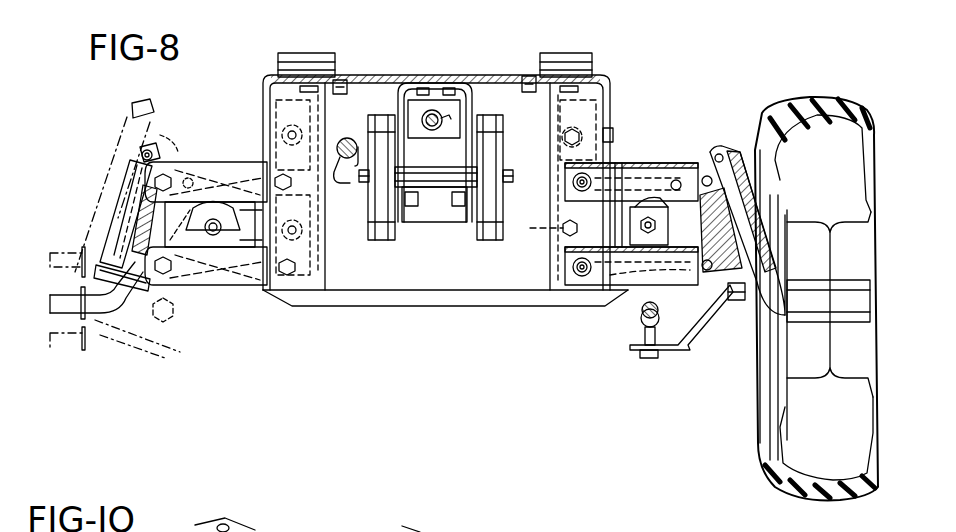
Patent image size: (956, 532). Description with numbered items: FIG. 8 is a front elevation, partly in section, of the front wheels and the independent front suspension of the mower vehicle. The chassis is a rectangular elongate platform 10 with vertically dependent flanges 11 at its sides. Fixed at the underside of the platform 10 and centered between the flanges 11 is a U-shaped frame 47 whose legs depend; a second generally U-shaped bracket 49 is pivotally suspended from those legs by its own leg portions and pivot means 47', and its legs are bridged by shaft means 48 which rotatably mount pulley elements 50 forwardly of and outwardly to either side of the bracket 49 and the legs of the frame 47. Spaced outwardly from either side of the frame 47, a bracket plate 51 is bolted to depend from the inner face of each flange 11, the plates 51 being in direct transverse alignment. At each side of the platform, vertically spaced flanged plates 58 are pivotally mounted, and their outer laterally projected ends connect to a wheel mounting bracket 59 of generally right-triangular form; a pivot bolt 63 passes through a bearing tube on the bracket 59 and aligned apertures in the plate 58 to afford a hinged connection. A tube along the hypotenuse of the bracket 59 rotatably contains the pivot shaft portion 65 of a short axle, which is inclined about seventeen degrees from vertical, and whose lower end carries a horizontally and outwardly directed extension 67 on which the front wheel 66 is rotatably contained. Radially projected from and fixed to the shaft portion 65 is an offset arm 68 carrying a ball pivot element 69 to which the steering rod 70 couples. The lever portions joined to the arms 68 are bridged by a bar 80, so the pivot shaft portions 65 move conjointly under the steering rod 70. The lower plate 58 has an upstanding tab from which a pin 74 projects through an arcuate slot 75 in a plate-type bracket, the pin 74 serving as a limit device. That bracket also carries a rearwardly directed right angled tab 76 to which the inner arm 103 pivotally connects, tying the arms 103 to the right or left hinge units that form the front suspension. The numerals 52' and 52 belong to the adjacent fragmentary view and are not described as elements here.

In FIG. 8, the platform 10 is at (602, 75).
In FIG. 8, the flange 11 is at (612, 102).
In FIG. 8, the U-shaped frame 47 is at (456, 152).
In FIG. 8, the pivot means 47' is at (432, 221).
In FIG. 8, the shaft means 48 is at (512, 178).
In FIG. 8, the second U-shaped bracket 49 is at (440, 212).
In FIG. 8, the pulley element 50 is at (492, 215).
In FIG. 8, the bracket plate 51 is at (328, 254).
In FIG. 8, the flanged plate 58 is at (180, 157).
In FIG. 8, the wheel mounting bracket 59 is at (114, 204).
In FIG. 8, the pivot bolt 63 is at (140, 272).
In FIG. 8, the pivot shaft portion 65 is at (720, 150).
In FIG. 8, the front wheel 66 is at (755, 455).
In FIG. 8, the extension 67 is at (50, 300).
In FIG. 8, the offset arm 68 is at (697, 312).
In FIG. 8, the ball pivot element 69 is at (642, 322).
In FIG. 8, the steering rod 70 is at (642, 308).
In FIG. 8, the pin 74 is at (213, 227).
In FIG. 8, the arcuate slot 75 is at (208, 202).
In FIG. 8, the right angled tab 76 is at (620, 204).
In FIG. 8, the bar 80 is at (482, 296).
In FIG. 10, the bar 80 is at (453, 521).
In FIG. 8, the inner arm 103 is at (560, 226).
In FIG. 10, the blade 52' is at (216, 510).
In FIG. 10, the blade 52 is at (250, 519).